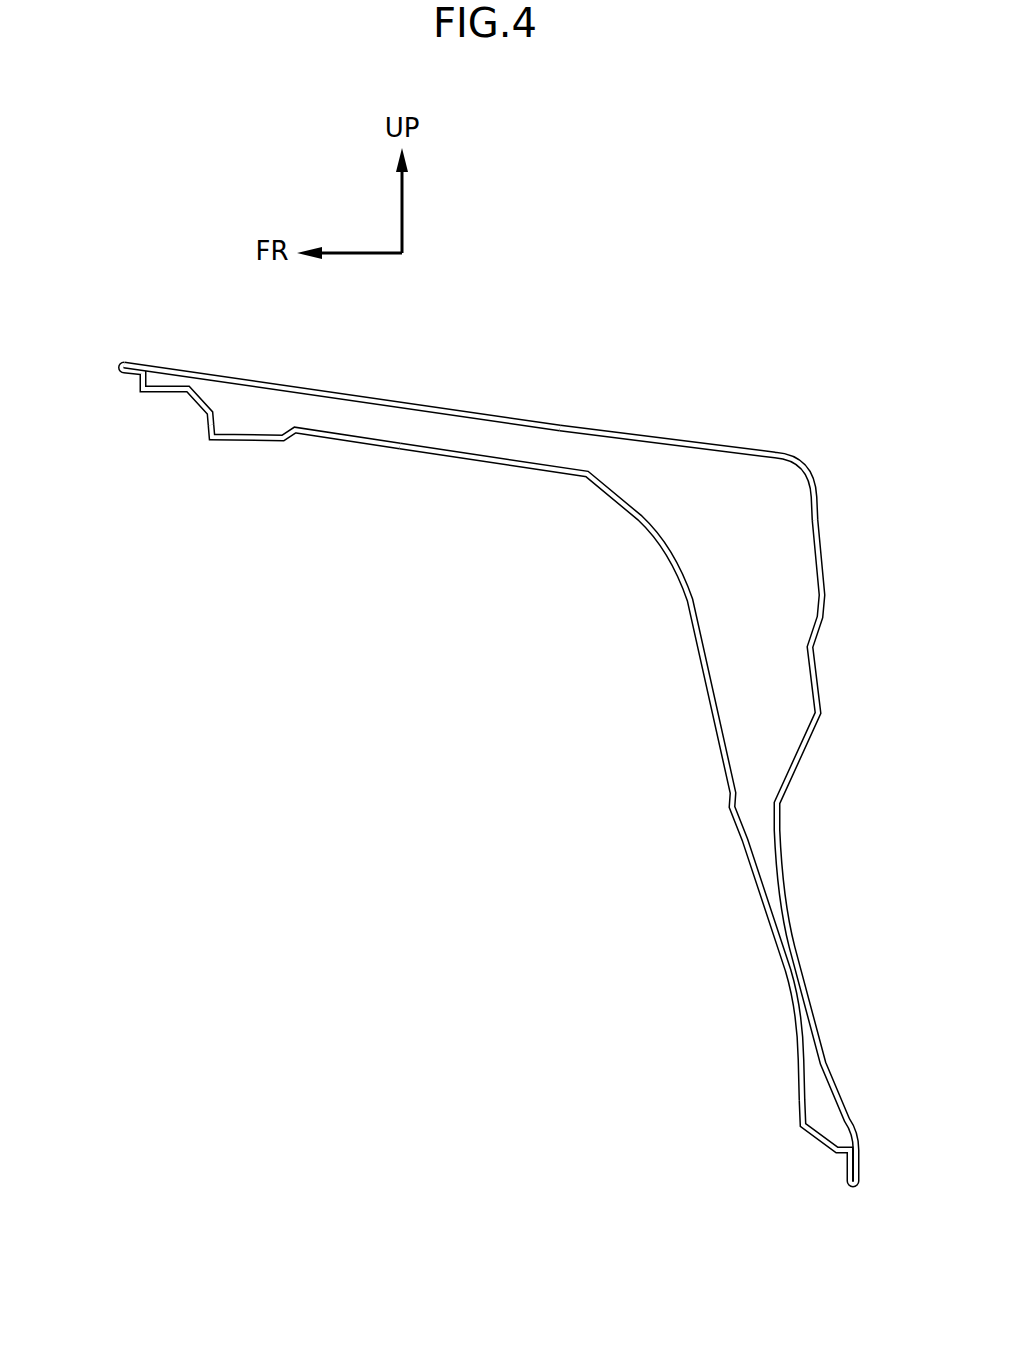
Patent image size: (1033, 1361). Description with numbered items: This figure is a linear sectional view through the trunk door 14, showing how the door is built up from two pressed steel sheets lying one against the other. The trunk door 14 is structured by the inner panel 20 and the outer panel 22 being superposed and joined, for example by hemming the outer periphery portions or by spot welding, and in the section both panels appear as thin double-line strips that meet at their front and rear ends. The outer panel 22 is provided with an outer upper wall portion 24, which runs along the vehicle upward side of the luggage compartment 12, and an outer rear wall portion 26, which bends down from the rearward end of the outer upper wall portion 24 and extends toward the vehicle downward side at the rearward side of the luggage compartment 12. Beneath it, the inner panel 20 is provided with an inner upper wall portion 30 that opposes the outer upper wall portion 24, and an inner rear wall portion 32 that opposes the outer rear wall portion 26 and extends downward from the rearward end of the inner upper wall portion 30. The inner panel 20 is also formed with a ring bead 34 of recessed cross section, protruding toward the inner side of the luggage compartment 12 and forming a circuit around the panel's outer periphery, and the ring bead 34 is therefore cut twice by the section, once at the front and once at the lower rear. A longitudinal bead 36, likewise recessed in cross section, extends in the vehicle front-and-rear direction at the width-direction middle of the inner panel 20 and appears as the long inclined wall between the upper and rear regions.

The luggage compartment 12 is at (447, 885).
The trunk door 14 is at (603, 387).
The inner panel 20 is at (136, 402).
The outer panel 22 is at (214, 364).
The outer upper wall portion 24 is at (703, 443).
The outer rear wall portion 26 is at (820, 535).
The inner upper wall portion 30 is at (168, 392).
The inner rear wall portion 32 is at (843, 1165).
The ring bead 34 is at (243, 443).
The longitudinal bead 36 is at (638, 520).